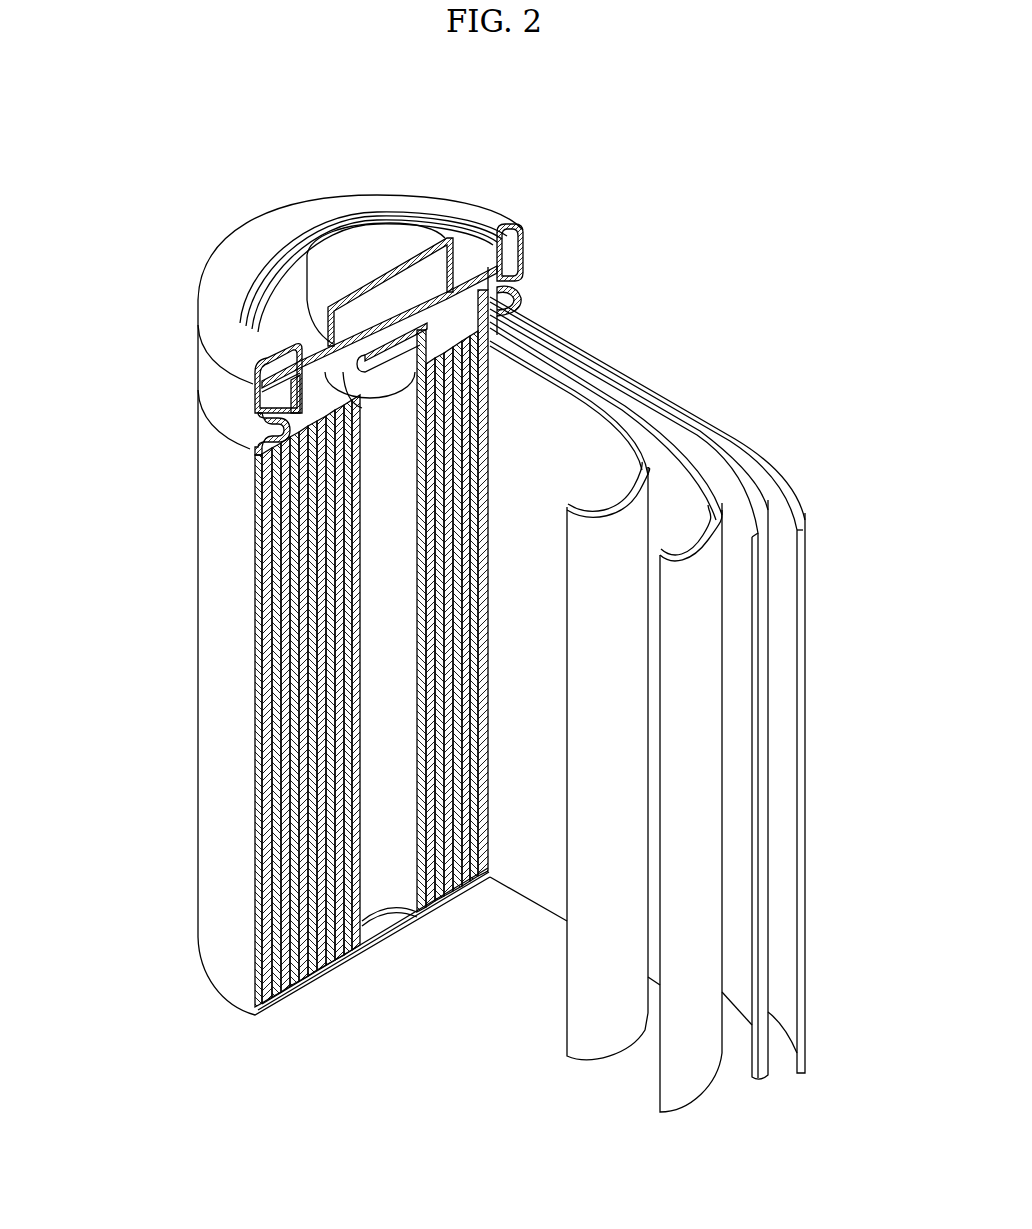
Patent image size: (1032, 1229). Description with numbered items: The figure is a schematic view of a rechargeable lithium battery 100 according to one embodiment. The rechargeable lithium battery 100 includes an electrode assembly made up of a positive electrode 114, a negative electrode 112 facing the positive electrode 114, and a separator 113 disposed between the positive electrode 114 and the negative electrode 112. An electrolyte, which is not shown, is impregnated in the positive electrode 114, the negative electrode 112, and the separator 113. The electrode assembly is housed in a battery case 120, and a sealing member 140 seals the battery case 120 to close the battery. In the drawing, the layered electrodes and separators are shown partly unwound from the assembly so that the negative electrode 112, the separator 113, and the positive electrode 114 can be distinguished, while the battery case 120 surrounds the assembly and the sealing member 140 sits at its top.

The rechargeable lithium battery 100 is at (577, 196).
The negative electrode 112 is at (766, 470).
The separator 113 is at (596, 385).
The positive electrode 114 is at (656, 427).
The battery case 120 is at (203, 557).
The sealing member 140 is at (363, 248).